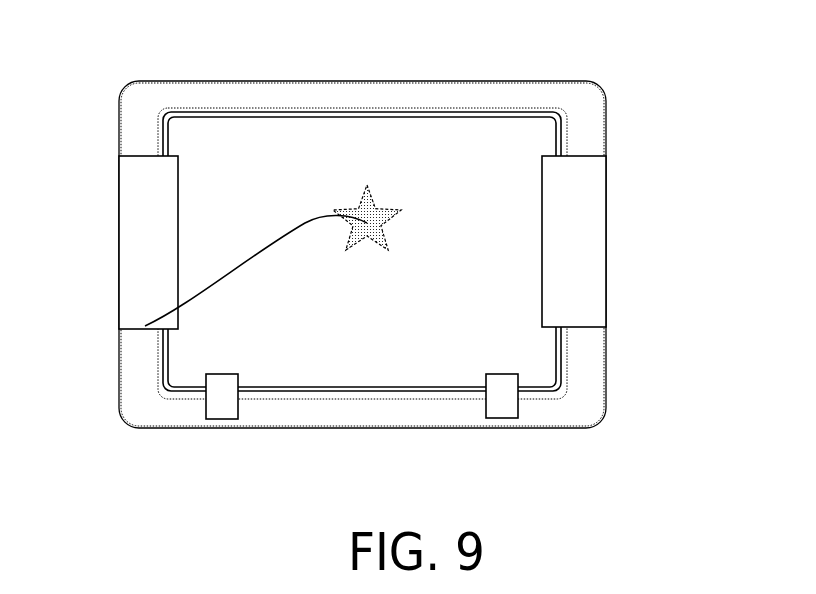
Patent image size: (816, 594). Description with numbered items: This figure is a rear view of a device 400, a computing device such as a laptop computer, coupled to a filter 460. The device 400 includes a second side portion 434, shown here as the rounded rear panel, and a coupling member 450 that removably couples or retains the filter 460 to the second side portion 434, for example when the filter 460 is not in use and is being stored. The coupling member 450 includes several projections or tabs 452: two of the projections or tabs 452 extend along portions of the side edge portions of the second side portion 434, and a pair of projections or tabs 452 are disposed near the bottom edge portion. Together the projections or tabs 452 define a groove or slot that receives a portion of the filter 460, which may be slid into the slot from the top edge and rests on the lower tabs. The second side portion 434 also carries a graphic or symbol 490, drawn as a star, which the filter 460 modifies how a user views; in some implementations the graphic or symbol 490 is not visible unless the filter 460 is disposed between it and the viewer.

The device 400 is at (247, 50).
The second side portion 434 is at (375, 92).
The coupling member 450 is at (636, 150).
The projections or tabs 452 is at (122, 215).
The filter 460 is at (510, 351).
The graphic or symbol 490 is at (145, 326).